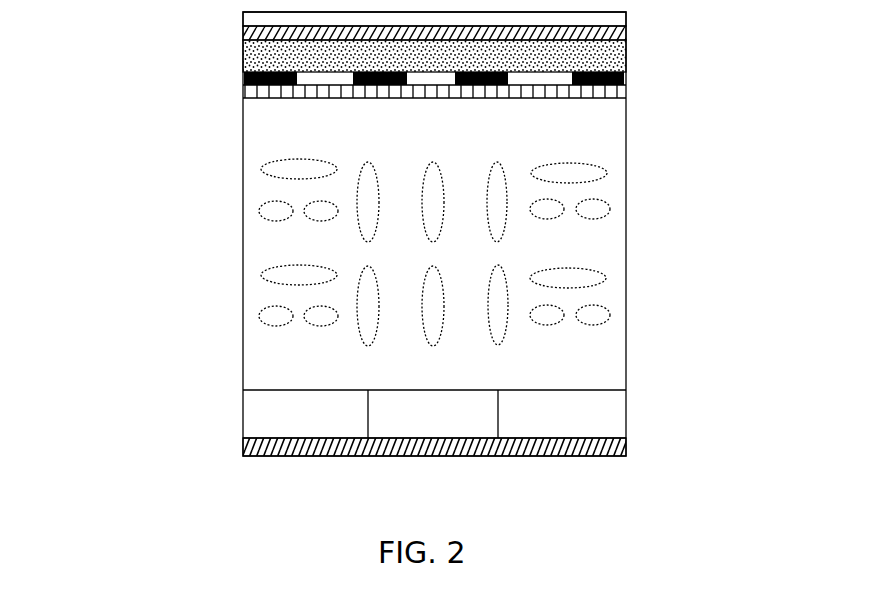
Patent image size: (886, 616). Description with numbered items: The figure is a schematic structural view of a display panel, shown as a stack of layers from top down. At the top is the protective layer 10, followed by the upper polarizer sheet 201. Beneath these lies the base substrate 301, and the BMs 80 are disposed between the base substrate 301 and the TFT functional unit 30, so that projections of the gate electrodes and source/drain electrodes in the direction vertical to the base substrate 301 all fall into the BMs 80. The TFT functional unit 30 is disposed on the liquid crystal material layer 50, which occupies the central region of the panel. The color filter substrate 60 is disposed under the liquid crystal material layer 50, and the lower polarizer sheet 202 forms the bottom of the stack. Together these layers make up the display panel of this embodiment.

The protective layer 10 is at (626, 16).
The upper polarizer sheet 201 is at (242, 32).
The base substrate 301 is at (627, 56).
The BMs 80 is at (245, 80).
The TFT functional unit 30 is at (242, 124).
The liquid crystal material layer 50 is at (563, 251).
The color filter substrate 60 is at (617, 415).
The lower polarizer sheet 202 is at (627, 442).